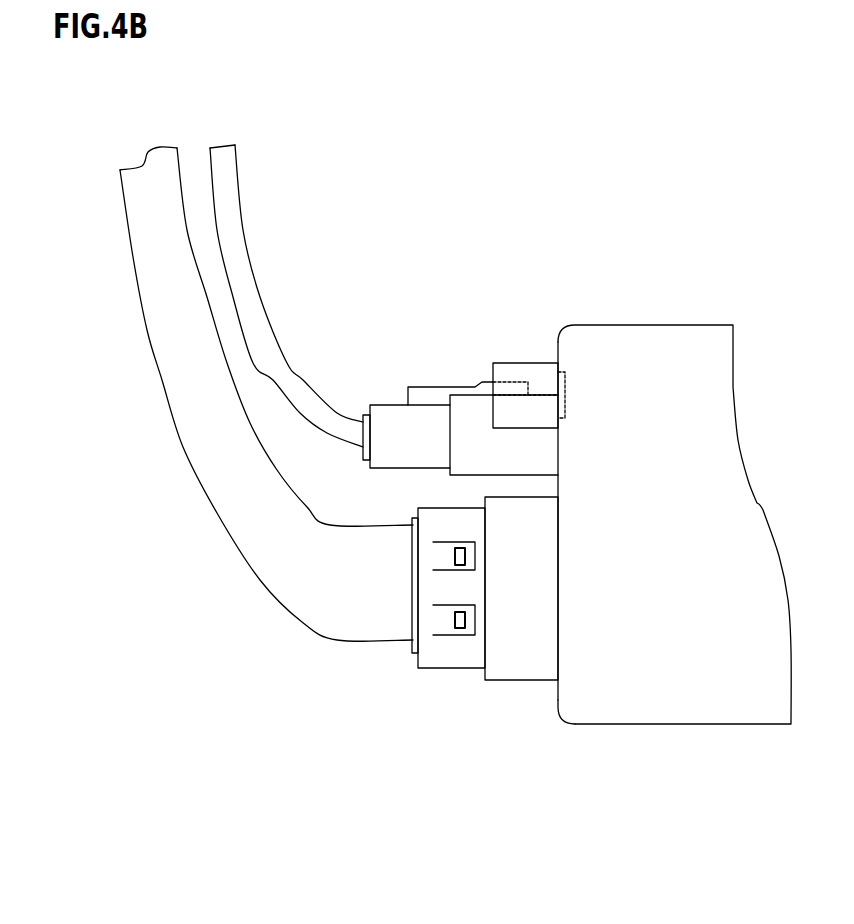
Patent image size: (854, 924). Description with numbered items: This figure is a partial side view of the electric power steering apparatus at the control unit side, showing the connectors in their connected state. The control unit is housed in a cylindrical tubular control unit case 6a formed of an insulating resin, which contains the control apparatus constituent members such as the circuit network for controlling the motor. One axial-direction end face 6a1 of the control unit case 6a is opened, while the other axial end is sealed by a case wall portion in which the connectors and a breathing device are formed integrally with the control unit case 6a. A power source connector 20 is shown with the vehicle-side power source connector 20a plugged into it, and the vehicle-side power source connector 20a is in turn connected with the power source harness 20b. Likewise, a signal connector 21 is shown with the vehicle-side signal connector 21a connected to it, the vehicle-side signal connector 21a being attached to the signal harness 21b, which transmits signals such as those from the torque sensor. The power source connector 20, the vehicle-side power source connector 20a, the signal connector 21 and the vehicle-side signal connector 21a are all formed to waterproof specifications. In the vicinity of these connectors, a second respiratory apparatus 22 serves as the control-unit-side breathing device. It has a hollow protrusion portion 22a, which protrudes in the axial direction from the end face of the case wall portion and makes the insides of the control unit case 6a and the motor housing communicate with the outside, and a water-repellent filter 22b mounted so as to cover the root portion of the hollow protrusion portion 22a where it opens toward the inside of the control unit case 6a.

The control unit case 6a is at (666, 612).
The one axial-direction end face 6a1 is at (557, 700).
The power source connector 20 is at (438, 387).
The vehicle-side power source connector 20a is at (385, 403).
The power source harness 20b is at (257, 268).
The signal connector 21 is at (523, 680).
The vehicle-side signal connector 21a is at (463, 667).
The signal harness 21b is at (302, 622).
The second respiratory apparatus 22 is at (590, 269).
The hollow protrusion portion 22a is at (513, 363).
The filter 22b is at (565, 383).